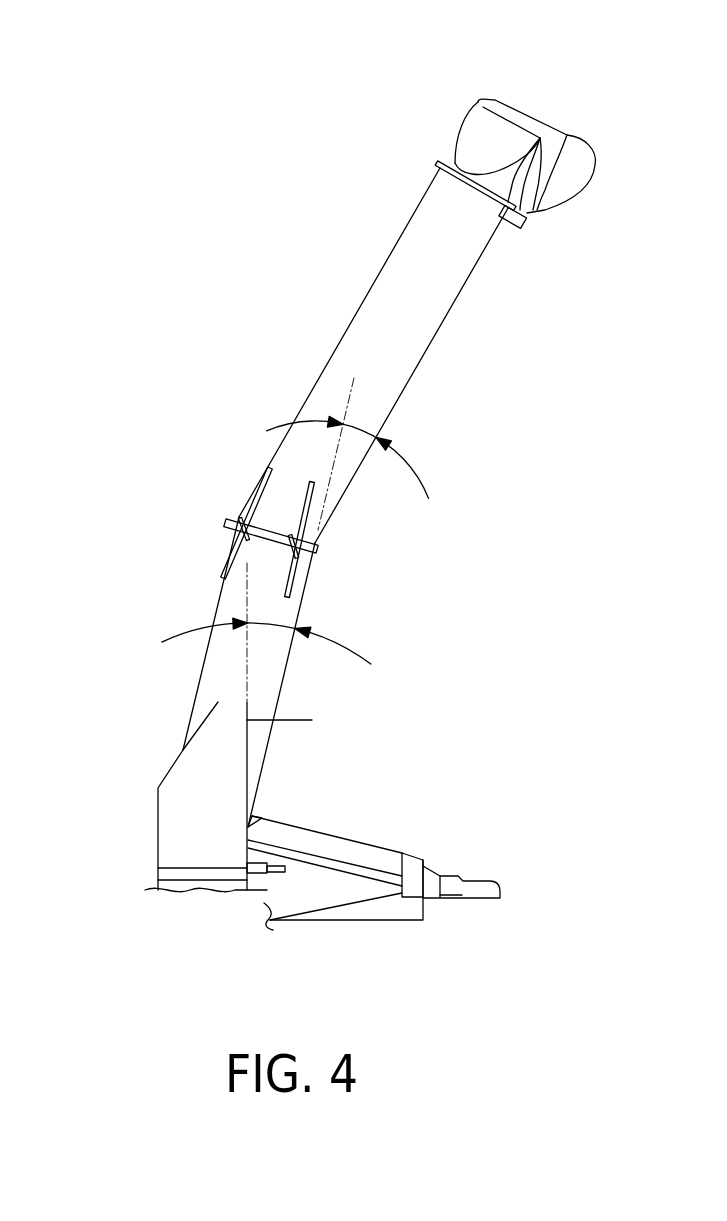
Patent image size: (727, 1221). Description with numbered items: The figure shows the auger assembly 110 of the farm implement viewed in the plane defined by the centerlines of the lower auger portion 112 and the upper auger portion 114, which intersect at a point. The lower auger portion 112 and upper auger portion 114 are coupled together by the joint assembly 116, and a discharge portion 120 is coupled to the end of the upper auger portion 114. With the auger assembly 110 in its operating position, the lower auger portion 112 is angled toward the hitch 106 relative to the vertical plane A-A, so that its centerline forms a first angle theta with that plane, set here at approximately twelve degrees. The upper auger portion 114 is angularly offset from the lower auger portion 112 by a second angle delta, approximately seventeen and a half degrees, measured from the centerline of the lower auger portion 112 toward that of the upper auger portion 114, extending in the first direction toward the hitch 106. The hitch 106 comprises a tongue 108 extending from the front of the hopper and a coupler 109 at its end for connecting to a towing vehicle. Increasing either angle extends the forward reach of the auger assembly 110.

The hitch 106 is at (432, 922).
The tongue 108 is at (345, 850).
The coupler 109 is at (487, 889).
The auger assembly 110 is at (295, 277).
The lower auger portion 112 is at (212, 592).
The upper auger portion 114 is at (450, 310).
The joint assembly 116 is at (218, 537).
The discharge portion 120 is at (508, 137).